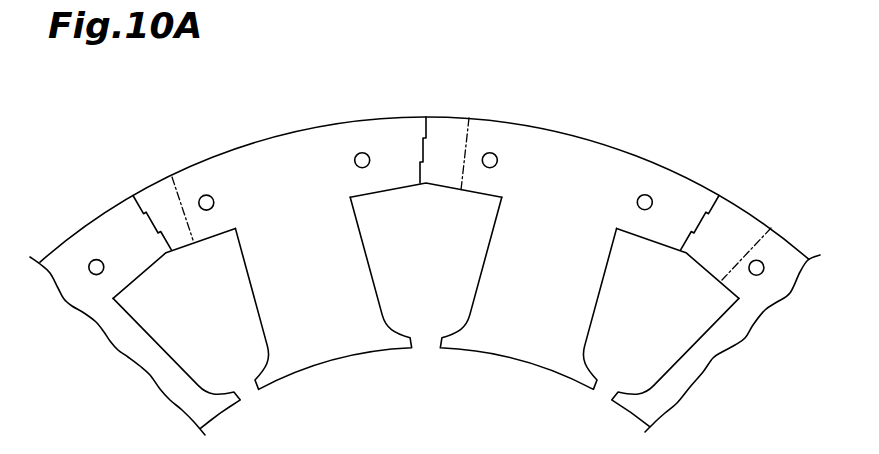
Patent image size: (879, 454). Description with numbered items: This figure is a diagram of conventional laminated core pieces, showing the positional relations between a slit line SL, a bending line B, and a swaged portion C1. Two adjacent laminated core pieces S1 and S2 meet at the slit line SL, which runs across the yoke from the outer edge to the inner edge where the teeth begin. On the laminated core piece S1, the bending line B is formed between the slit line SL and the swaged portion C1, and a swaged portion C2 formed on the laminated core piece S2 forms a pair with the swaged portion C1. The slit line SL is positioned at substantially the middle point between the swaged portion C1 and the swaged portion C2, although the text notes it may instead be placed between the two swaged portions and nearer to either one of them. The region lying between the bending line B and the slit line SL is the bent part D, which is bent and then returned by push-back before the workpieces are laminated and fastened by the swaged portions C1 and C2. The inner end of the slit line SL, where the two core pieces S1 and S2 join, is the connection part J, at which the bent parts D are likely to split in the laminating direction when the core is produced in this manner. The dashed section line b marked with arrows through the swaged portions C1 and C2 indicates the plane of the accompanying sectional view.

The slit line SL is at (135, 199).
The bending line B is at (181, 192).
The swaged portion C1 is at (491, 152).
The swaged portion C2 is at (362, 152).
The bent part D is at (445, 130).
The laminated core piece S1 is at (625, 163).
The laminated core piece S2 is at (237, 165).
The connection part J is at (424, 189).
The line b- b is at (558, 115).